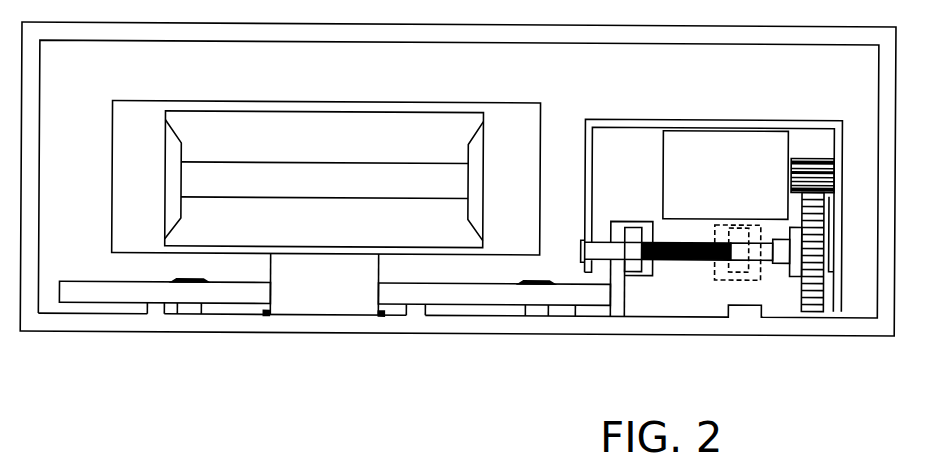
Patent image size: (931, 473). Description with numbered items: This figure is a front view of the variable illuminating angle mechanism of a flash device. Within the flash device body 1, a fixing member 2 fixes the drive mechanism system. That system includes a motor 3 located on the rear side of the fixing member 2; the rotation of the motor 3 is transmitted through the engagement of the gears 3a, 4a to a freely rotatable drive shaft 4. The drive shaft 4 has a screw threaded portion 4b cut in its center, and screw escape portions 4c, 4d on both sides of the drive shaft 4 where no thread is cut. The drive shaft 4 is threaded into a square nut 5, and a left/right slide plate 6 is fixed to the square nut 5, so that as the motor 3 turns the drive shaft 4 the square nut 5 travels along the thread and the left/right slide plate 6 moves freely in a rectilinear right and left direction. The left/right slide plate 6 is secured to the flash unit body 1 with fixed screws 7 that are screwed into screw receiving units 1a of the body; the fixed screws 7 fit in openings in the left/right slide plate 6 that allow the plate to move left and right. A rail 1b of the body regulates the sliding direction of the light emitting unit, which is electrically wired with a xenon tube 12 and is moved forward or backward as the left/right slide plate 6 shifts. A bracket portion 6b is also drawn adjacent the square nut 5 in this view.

The flash device body 1 is at (885, 303).
The screw receiving units 1a is at (193, 312).
The rail 1b is at (157, 311).
The fixing member 2 is at (778, 122).
The motor 3 is at (698, 135).
The gear 3a is at (828, 169).
The drive shaft 4 is at (782, 258).
The gear 4a is at (818, 238).
The screw threaded portion 4b is at (685, 259).
The screw escape portion 4c is at (772, 255).
The screw escape portion 4d is at (585, 237).
The square nut 5 is at (634, 250).
The left/right slide plate 6 is at (443, 287).
The bracket 6b is at (652, 221).
The fixed screws 7 is at (183, 279).
The xenon tube 12 is at (213, 177).